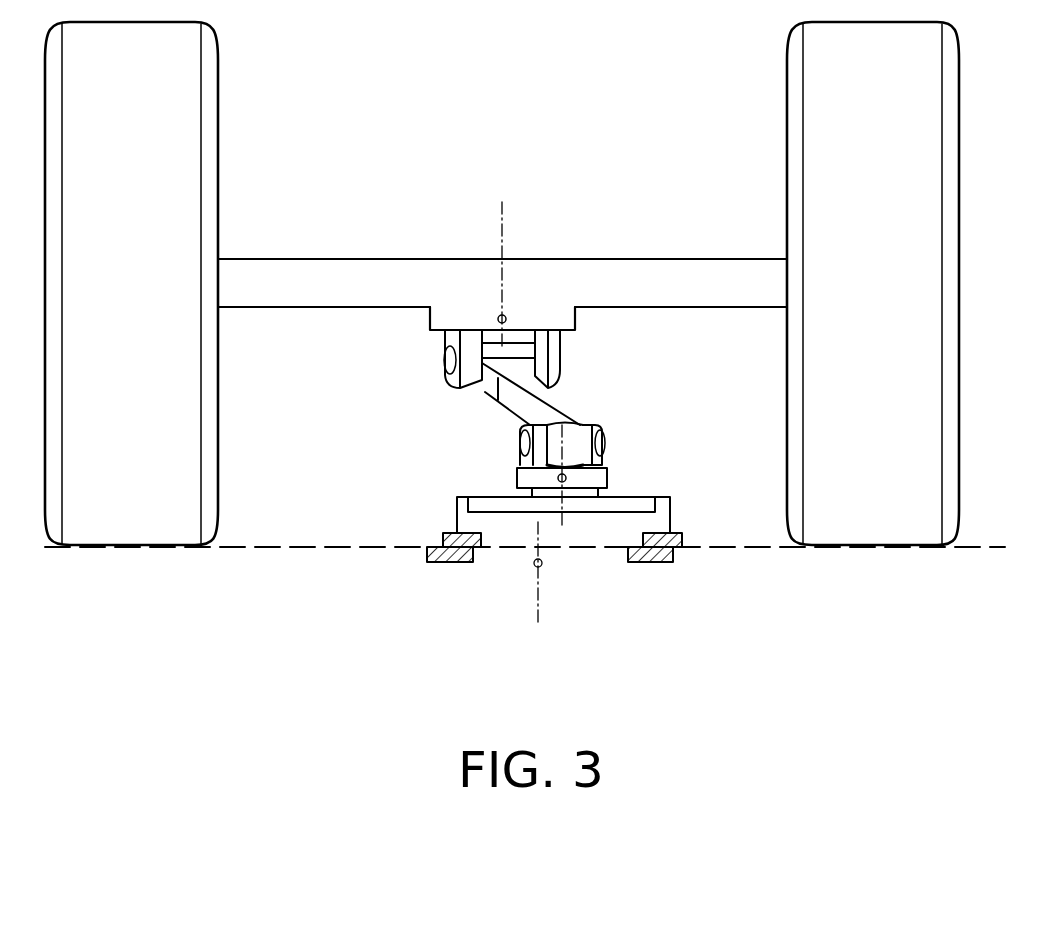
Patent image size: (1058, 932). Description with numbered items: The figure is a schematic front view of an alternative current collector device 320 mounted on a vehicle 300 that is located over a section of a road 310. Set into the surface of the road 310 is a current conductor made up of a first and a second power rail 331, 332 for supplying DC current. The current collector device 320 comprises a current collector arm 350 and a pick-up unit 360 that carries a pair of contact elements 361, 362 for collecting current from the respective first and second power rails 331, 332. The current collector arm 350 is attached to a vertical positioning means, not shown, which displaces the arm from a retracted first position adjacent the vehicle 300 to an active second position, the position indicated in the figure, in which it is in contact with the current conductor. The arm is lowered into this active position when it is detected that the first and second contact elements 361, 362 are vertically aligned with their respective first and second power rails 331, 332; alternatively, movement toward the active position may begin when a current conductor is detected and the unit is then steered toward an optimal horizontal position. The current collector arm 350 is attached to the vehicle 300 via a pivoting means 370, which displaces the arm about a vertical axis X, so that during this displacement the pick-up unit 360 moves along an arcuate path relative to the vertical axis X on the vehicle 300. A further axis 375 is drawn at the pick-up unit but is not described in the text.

The vehicle 300 is at (652, 235).
The road 310 is at (762, 548).
The current collector device 320 is at (398, 424).
The first power rail 331 is at (657, 565).
The second power rail 332 is at (433, 563).
The current collector arm 350 is at (542, 405).
The pick-up unit 360 is at (392, 526).
The first contact element 361 is at (682, 540).
The second contact element 362 is at (440, 540).
The pivoting means 370 is at (405, 362).
The axis 375 is at (535, 568).
The vertical axis X is at (500, 213).